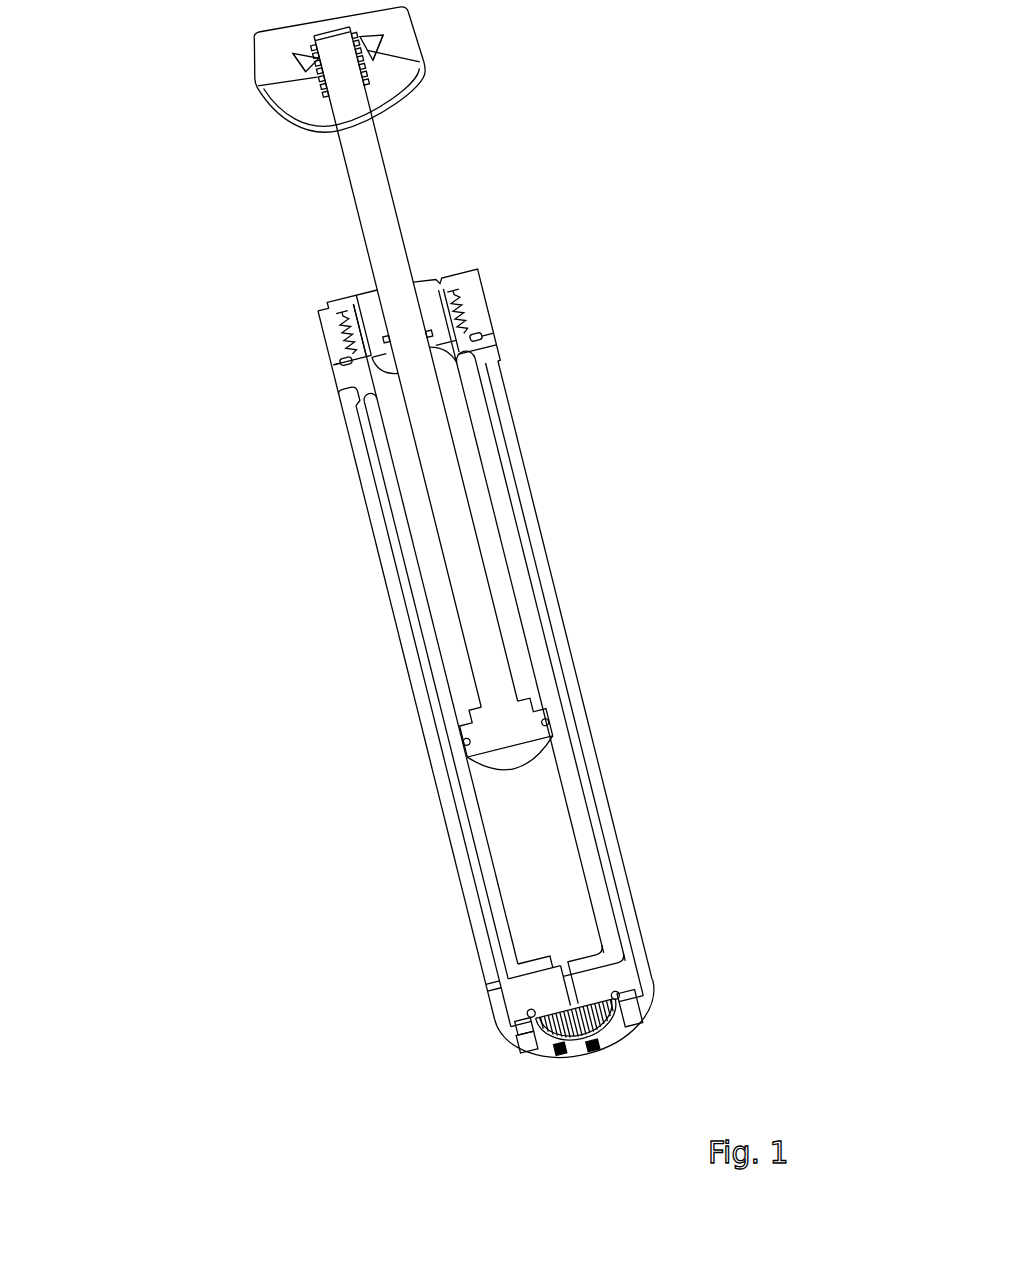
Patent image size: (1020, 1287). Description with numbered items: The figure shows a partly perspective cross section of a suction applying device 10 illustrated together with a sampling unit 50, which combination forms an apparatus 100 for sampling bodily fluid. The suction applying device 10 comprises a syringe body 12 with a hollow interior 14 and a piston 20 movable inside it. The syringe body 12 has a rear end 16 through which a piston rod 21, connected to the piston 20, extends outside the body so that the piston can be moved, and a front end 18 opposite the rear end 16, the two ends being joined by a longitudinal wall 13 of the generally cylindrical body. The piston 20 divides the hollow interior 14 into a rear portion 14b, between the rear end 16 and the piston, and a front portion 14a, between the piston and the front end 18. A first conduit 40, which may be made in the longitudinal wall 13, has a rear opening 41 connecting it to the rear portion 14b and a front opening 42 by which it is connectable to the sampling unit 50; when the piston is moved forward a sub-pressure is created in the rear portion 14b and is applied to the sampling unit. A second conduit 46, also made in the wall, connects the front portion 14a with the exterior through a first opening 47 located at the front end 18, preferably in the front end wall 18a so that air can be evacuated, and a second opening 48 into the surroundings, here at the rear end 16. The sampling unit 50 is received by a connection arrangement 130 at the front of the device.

The apparatus for sampling bodily fluid 100 is at (238, 494).
The suction applying device 10 is at (602, 382).
The syringe body 12 is at (580, 685).
The longitudinal wall 13 is at (383, 575).
The hollow interior 14 is at (550, 825).
The front portion 14a is at (548, 880).
The rear portion 14b is at (492, 552).
The rear end 16 is at (435, 283).
The front end 18 is at (635, 989).
The front end wall 18a is at (512, 1008).
The piston 20 is at (518, 735).
The piston rod 21 is at (478, 600).
The first conduit 40 is at (555, 643).
The rear opening 41 is at (454, 359).
The front opening 42 is at (577, 1000).
The second conduit 46 is at (501, 984).
The first opening 47 is at (528, 962).
The second opening 48 is at (341, 398).
The sampling unit 50 is at (610, 1037).
The connection arrangement 130 is at (517, 1030).